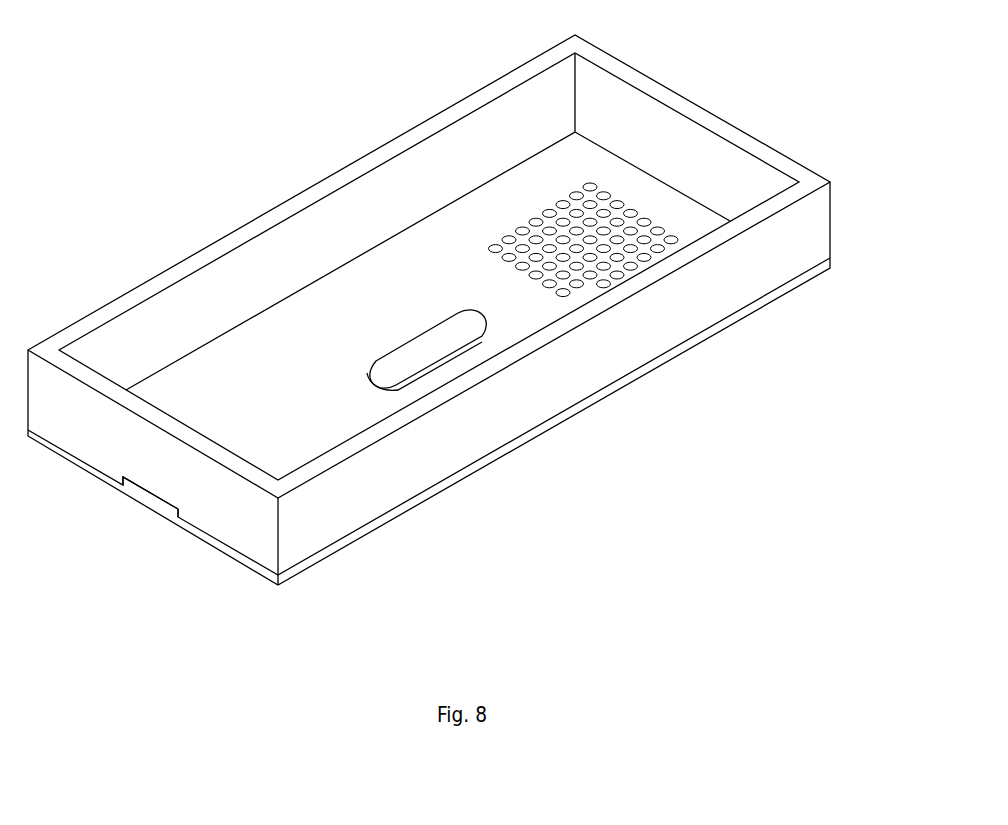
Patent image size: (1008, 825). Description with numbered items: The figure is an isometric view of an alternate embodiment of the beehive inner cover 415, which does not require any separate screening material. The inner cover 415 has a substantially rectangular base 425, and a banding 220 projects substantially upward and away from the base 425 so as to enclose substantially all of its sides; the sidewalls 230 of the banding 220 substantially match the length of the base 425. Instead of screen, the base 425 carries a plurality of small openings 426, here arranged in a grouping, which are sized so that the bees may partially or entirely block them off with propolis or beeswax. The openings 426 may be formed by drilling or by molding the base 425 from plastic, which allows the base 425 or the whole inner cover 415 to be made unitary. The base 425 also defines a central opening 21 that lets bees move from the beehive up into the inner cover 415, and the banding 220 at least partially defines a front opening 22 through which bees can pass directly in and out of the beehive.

The inner cover 415 is at (429, 309).
The banding 220 is at (681, 97).
The sidewalls 230 is at (420, 167).
The base 425 is at (290, 318).
The openings 426 is at (560, 200).
The central opening 21 is at (445, 360).
The front opening 22 is at (155, 493).